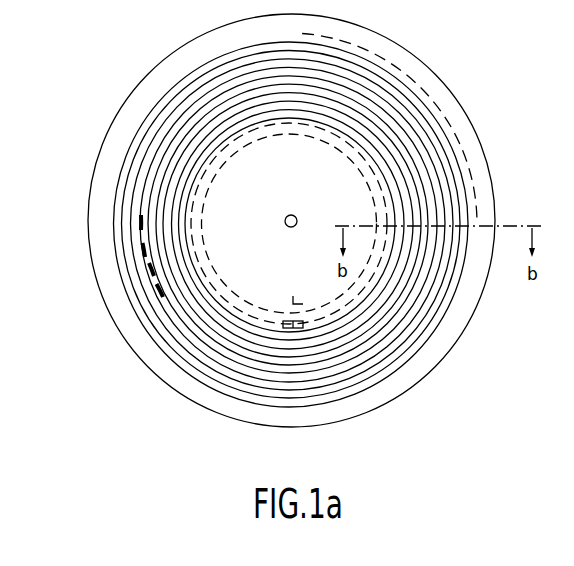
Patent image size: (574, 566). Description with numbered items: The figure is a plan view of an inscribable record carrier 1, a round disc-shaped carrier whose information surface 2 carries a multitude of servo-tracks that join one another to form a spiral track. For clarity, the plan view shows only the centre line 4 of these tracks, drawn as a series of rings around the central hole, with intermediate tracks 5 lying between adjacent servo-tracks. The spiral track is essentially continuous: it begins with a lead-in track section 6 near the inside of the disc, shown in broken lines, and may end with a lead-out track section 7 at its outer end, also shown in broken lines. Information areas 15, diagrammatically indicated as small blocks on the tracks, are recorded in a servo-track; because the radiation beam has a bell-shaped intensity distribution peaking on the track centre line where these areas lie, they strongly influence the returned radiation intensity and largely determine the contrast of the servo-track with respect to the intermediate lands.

The record carrier 1 is at (451, 82).
The information surface 2 is at (179, 57).
The centre line 4 is at (167, 319).
The intermediate tracks 5 is at (208, 352).
The lead-in track section 6 is at (245, 301).
The lead-out track section 7 is at (478, 142).
The information areas 15 is at (140, 224).